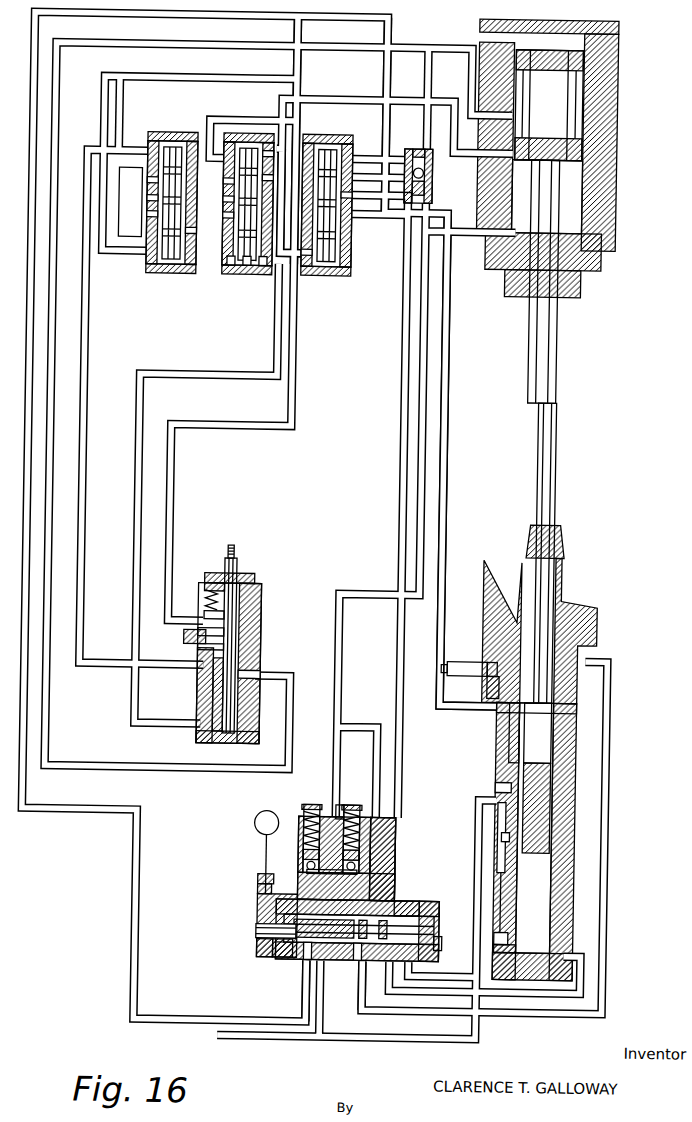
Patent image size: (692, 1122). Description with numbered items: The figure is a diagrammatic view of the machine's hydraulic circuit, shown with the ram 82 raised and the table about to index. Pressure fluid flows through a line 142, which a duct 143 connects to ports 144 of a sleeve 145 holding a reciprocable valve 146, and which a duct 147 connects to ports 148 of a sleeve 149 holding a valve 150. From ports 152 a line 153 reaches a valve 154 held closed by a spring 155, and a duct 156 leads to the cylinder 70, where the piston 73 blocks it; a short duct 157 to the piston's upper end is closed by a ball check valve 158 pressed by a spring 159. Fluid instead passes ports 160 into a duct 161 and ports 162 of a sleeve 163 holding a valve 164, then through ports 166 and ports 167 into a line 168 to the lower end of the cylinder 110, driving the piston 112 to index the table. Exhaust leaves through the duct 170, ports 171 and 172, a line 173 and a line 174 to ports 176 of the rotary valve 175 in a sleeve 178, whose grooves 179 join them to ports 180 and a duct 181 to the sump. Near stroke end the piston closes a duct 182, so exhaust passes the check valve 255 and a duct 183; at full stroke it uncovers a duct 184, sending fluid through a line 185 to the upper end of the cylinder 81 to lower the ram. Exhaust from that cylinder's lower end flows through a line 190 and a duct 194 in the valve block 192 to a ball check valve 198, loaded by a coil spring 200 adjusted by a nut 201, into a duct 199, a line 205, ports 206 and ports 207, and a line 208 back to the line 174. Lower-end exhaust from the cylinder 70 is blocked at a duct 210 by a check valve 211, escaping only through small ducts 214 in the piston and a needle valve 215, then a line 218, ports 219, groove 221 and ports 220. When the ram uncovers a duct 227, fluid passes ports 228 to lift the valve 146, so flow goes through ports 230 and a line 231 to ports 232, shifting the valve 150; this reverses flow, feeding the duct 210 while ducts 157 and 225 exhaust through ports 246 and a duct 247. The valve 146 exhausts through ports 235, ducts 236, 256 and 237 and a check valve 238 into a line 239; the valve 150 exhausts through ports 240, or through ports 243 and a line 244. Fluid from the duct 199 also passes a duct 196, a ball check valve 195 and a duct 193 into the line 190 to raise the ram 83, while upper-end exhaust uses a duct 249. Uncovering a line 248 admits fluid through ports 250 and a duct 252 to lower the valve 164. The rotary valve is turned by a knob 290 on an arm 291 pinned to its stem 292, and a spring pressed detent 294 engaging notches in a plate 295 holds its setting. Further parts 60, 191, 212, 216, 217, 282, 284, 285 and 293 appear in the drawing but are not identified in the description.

The piston rod 60 is at (553, 493).
The cylinder 70 is at (568, 798).
The piston 73 is at (512, 738).
The cylinder 81 is at (578, 173).
The ram 82 is at (560, 100).
The ram 83 is at (556, 200).
The cylinder 110 is at (256, 640).
The piston 112 is at (226, 696).
The line 142 is at (185, 277).
The duct 143 is at (215, 303).
The ports 144 is at (141, 201).
The sleeve 145 is at (146, 145).
The valve 146 is at (168, 150).
The duct 147 is at (396, 300).
The ports 148 is at (358, 195).
The sleeve 149 is at (341, 258).
The valve 150 is at (318, 144).
The ports 152 is at (377, 178).
The line 153 is at (398, 180).
The valve 154 is at (418, 172).
The spring 155 is at (419, 187).
The duct 156 is at (446, 304).
The duct 157 is at (491, 690).
The ball check valve 158 is at (494, 662).
The spring 159 is at (490, 678).
The ports 160 is at (141, 217).
The duct 161 is at (225, 277).
The ports 162 is at (241, 277).
The sleeve 163 is at (258, 277).
The valve 164 is at (240, 144).
The ports 166 is at (218, 210).
The ports 167 is at (219, 195).
The line 168 is at (270, 296).
The duct 170 is at (294, 300).
The ports 171 is at (219, 180).
The ports 172 is at (277, 182).
The line 173 is at (294, 65).
The line 174 is at (250, 22).
The rotary valve 175 is at (449, 941).
The ports 176 is at (320, 960).
The sleeve 178 is at (432, 900).
The grooves 179 is at (359, 929).
The ports 180 is at (283, 950).
The duct 181 is at (309, 990).
The duct 182 is at (206, 626).
The duct 183 is at (204, 605).
The duct 184 is at (262, 676).
The line 185 is at (232, 51).
The line 190 is at (452, 234).
The ball 191 is at (312, 865).
The valve block 192 is at (398, 828).
The duct 193 is at (328, 812).
The duct 194 is at (342, 800).
The ball check valve 195 is at (312, 853).
The duct 196 is at (318, 876).
The ball check valve 198 is at (362, 866).
The duct 199 is at (388, 822).
The coil spring 200 is at (356, 808).
The nut 201 is at (357, 813).
The line 205 is at (398, 667).
The ports 206 is at (378, 215).
The ports 207 is at (338, 235).
The line 208 is at (384, 32).
The duct 210 is at (505, 924).
The check valve 211 is at (515, 938).
The seal 212 is at (523, 948).
The ducts 214 is at (557, 830).
The needle valve 215 is at (498, 785).
The rod 216 is at (501, 840).
The collar 217 is at (505, 856).
The line 218 is at (479, 861).
The ports 219 is at (375, 957).
The ports 220 is at (410, 900).
The groove 221 is at (359, 929).
The duct 225 is at (500, 712).
The duct 227 is at (468, 110).
The ports 228 is at (145, 277).
The ports 230 is at (141, 184).
The line 231 is at (214, 124).
The ports 232 is at (334, 135).
The ports 235 is at (165, 135).
The ducts 236 is at (88, 150).
The duct 237 is at (199, 651).
The check valve 238 is at (185, 636).
The line 239 is at (150, 640).
The ports 240 is at (300, 262).
The ports 243 is at (139, 248).
The line 244 is at (92, 200).
The ports 246 is at (377, 155).
The duct 247 is at (405, 152).
The line 248 is at (326, 105).
The duct 249 is at (424, 63).
The ports 250 is at (256, 135).
The duct 252 is at (274, 159).
The check valve 255 is at (206, 610).
The duct 256 is at (214, 676).
The land 282 is at (384, 928).
The conduit 284 is at (407, 981).
The end plug 285 is at (430, 900).
The knob 290 is at (614, 795).
The arm 291 is at (262, 909).
The stem 292 is at (261, 933).
The conduit 293 is at (485, 974).
The spring pressed detent 294 is at (263, 890).
The plate 295 is at (262, 950).